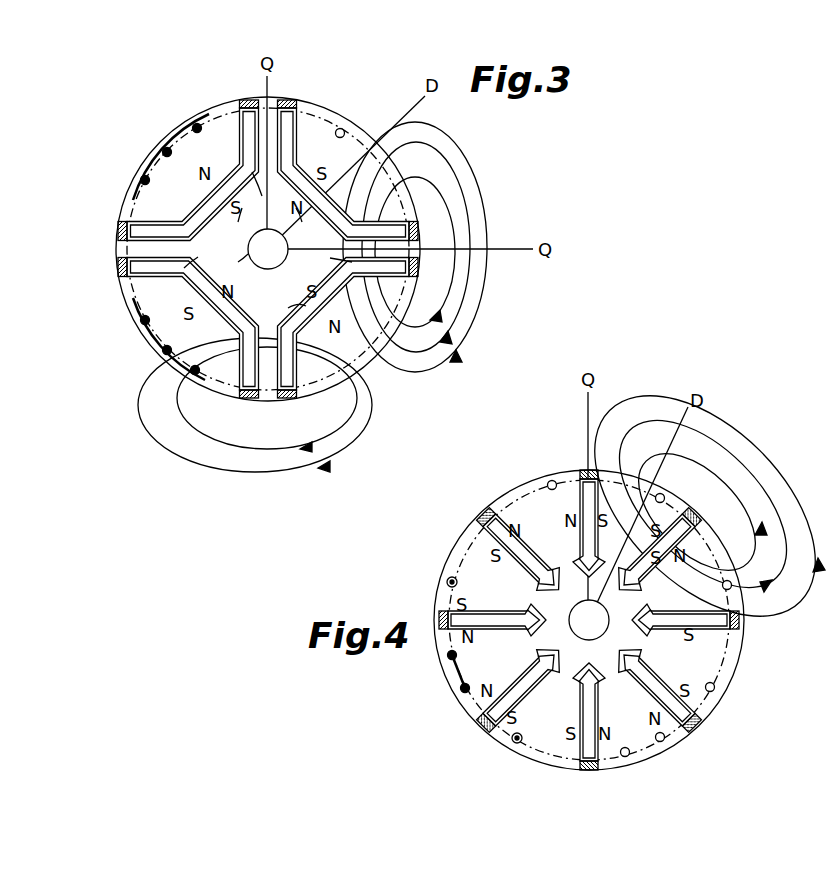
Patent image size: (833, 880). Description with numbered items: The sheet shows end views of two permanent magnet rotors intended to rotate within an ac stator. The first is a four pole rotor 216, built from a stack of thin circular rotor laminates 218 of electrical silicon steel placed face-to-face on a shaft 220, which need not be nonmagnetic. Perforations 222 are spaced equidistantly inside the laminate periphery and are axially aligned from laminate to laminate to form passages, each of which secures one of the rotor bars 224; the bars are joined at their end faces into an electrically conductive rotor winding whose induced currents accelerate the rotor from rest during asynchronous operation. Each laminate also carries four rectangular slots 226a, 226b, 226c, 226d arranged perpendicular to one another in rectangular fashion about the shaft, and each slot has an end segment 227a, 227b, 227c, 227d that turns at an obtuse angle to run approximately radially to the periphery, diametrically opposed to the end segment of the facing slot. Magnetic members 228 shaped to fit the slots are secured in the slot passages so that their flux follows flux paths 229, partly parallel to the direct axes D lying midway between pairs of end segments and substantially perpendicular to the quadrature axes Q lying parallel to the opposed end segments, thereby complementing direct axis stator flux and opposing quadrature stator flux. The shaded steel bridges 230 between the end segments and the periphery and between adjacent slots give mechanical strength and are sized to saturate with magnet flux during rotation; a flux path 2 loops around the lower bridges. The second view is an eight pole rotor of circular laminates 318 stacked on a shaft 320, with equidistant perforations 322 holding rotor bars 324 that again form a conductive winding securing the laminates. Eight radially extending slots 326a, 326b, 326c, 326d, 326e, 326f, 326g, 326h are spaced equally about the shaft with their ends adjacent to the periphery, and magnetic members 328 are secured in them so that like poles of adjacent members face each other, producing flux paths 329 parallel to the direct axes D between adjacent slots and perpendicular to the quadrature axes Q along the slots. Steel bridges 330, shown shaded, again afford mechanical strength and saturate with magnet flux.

In FIG. 3, the flux path 2 is at (282, 474).
In FIG. 3, the four pole permanent magnet rotor 216 is at (186, 493).
In FIG. 3, the rotor laminates 218 is at (135, 321).
In FIG. 3, the shaft 220 is at (265, 265).
In FIG. 3, the perforations 222 is at (192, 127).
In FIG. 3, the rotor bars 224 is at (143, 178).
In FIG. 3, the slot 226a is at (230, 225).
In FIG. 3, the slot 226b is at (228, 268).
In FIG. 3, the slot 226c is at (274, 314).
In FIG. 3, the slot 226d is at (318, 225).
In FIG. 3, the end segment 227a is at (240, 118).
In FIG. 3, the end segment 227b is at (127, 276).
In FIG. 3, the end segment 227c is at (293, 392).
In FIG. 3, the end segment 227d is at (322, 118).
In FIG. 3, the magnetic members 228 is at (268, 220).
In FIG. 3, the flux paths 229 is at (483, 198).
In FIG. 3, the steel bridges 230 is at (118, 265).
In FIG. 4, the rotor laminates 318 is at (455, 705).
In FIG. 4, the shaft 320 is at (590, 600).
In FIG. 4, the perforations 322 is at (462, 688).
In FIG. 4, the rotor bars 324 is at (460, 668).
In FIG. 4, the slot 326a is at (478, 522).
In FIG. 4, the slot 326b is at (490, 612).
In FIG. 4, the slot 326c is at (522, 686).
In FIG. 4, the slot 326d is at (600, 718).
In FIG. 4, the slot 326e is at (666, 680).
In FIG. 4, the slot 326f is at (657, 616).
In FIG. 4, the slot 326g is at (634, 572).
In FIG. 4, the slot 326h is at (584, 470).
In FIG. 4, the magnetic members 328 is at (690, 722).
In FIG. 4, the flux paths 329 is at (770, 460).
In FIG. 4, the steel bridges 330 is at (695, 512).